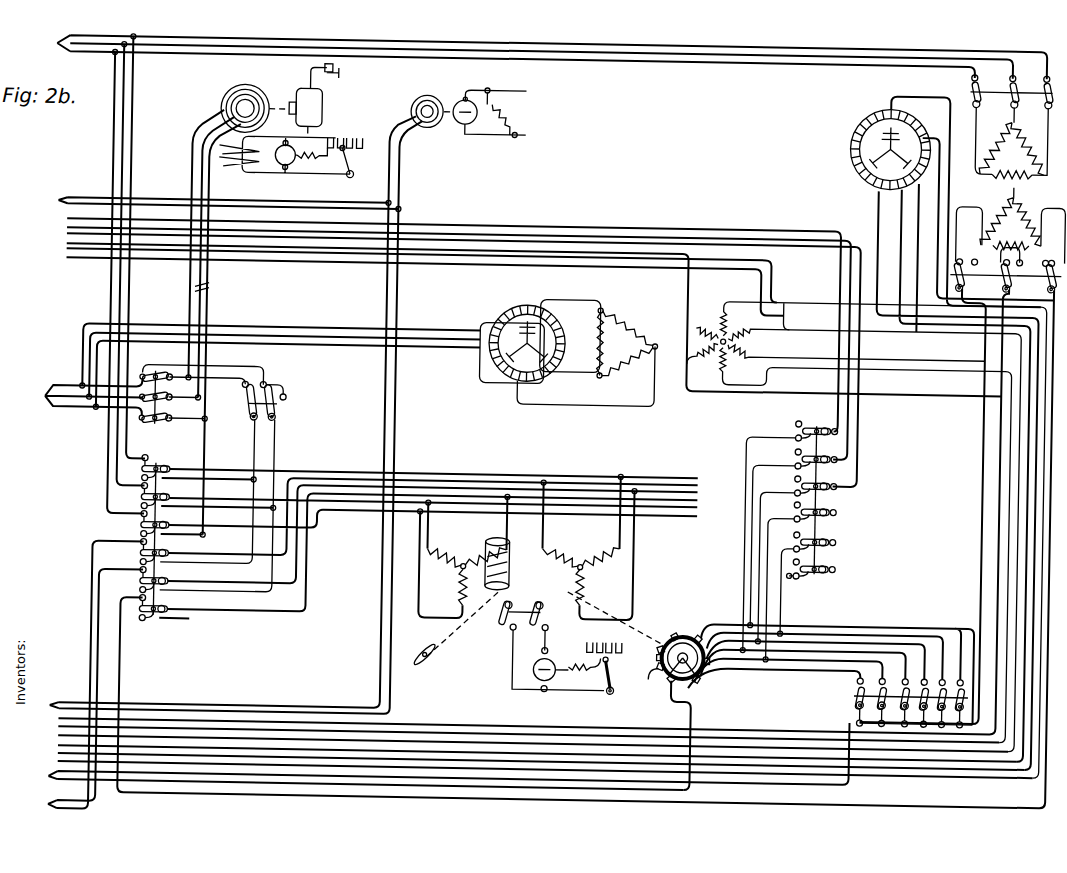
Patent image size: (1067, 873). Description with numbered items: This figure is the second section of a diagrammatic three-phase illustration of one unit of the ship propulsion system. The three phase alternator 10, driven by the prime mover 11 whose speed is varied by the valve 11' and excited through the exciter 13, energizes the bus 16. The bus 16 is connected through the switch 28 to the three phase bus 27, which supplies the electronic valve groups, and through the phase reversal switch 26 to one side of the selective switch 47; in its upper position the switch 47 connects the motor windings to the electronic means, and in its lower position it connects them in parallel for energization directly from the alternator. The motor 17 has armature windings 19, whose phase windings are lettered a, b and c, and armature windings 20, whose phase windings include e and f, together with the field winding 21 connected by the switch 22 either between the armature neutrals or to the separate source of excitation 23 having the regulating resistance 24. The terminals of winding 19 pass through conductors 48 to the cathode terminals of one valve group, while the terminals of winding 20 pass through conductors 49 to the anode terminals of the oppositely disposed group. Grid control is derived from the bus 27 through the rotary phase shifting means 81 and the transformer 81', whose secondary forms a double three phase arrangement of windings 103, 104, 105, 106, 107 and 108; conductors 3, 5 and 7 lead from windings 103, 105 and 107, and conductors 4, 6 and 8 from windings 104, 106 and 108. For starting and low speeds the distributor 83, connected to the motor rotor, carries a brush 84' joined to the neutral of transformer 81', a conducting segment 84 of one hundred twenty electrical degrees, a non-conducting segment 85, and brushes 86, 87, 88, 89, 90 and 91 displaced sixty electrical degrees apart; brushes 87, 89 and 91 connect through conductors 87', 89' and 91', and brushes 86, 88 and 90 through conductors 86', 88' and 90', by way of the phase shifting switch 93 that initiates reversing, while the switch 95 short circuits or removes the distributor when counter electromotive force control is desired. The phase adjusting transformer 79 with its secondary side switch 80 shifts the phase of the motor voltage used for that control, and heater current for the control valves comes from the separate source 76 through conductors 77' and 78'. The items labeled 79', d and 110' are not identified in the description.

The conductors 49 is at (537, 280).
The phase adjusting transformer 79 is at (1003, 140).
The switch 80 is at (1032, 262).
The three-phase motor 79' is at (931, 432).
The alternator 10 is at (226, 90).
The bus 16 is at (211, 289).
The prime mover 11 is at (316, 122).
The valve 11' is at (345, 72).
The exciter 13 is at (285, 155).
The separate source of excitation 76 is at (454, 90).
The conductors 77' is at (220, 200).
The conductor 90' is at (437, 318).
The conductor 86' is at (441, 338).
The conductor 88' is at (439, 357).
The conductor 6 is at (71, 242).
The conductor 4 is at (71, 247).
The conductor 8 is at (71, 256).
The three phase bus 27 is at (252, 371).
The switch 28 is at (172, 420).
The phase reversal switch 26 is at (284, 400).
The selective switch 47 is at (130, 526).
The rotary phase shifting means 81 is at (551, 352).
The transformer 81' is at (689, 323).
The secondary winding 103 is at (726, 294).
The secondary winding 104 is at (780, 315).
The secondary winding 105 is at (770, 339).
The secondary winding 106 is at (733, 358).
The secondary winding 107 is at (702, 365).
The secondary winding 108 is at (695, 338).
The phase shifting switch 93 is at (850, 488).
The motor windings 19 is at (470, 552).
The phase winding a is at (478, 547).
The phase winding b is at (427, 562).
The phase winding c is at (445, 592).
The motor windings 20 is at (590, 552).
The phase winding f is at (553, 547).
The phase winding e is at (604, 548).
The resistor d is at (596, 576).
The motor 17 is at (510, 527).
The field winding 21 is at (522, 560).
The switch 22 is at (532, 614).
The separate source of excitation 23 is at (546, 656).
The regulating resistance 24 is at (604, 661).
The distributor mechanism 83 is at (706, 592).
The brush 88 is at (831, 671).
The brush 87 is at (798, 647).
The brush 89 is at (814, 663).
The conducting segment 84 is at (799, 674).
The brush 84' is at (785, 686).
The brush 86 is at (647, 635).
The non-conducting segment 85 is at (668, 641).
The brush 91 is at (643, 675).
The brush 90 is at (661, 732).
The switch 95 is at (920, 700).
The conductors 78' is at (211, 456).
The conductor 87' is at (516, 507).
The conductor 89' is at (511, 735).
The conductor 91' is at (515, 744).
The conductor 7 is at (71, 744).
The conductor 5 is at (71, 752).
The conductor 3 is at (71, 760).
The conductor 110' is at (430, 751).
The conductors 48 is at (538, 550).